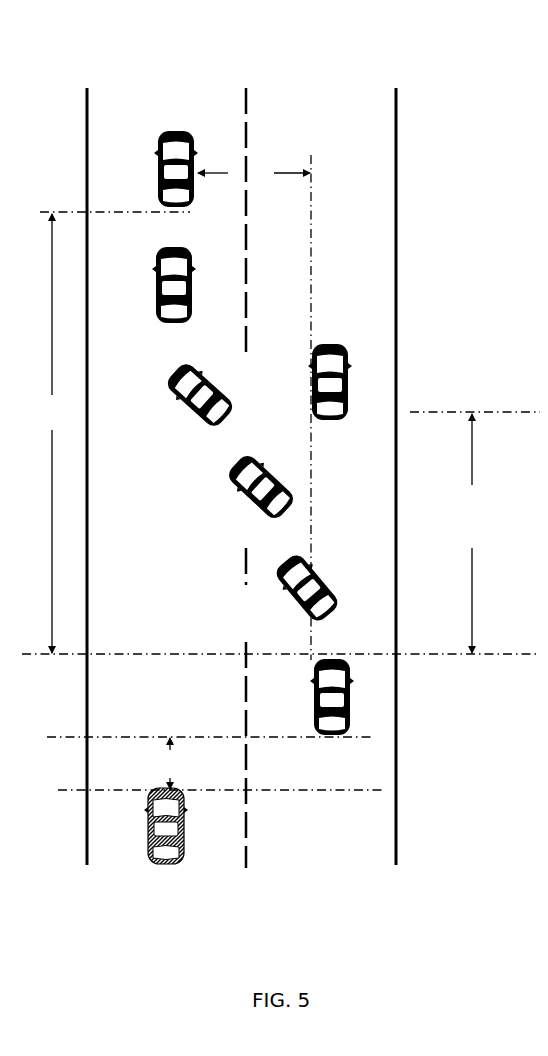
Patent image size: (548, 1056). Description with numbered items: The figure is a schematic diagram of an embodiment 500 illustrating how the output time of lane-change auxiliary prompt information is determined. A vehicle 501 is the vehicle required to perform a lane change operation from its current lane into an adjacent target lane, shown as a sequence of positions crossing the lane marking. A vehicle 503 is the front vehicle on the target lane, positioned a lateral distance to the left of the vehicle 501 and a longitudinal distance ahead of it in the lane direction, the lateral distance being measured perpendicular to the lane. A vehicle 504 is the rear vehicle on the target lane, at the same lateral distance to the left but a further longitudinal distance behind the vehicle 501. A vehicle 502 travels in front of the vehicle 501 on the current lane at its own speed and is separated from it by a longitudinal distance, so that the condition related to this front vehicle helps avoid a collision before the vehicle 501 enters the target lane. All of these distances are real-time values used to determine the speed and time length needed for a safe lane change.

The embodiment 500 is at (70, 53).
The vehicle 501 is at (350, 689).
The vehicle 502 is at (340, 348).
The vehicle 503 is at (190, 140).
The vehicle 504 is at (163, 863).